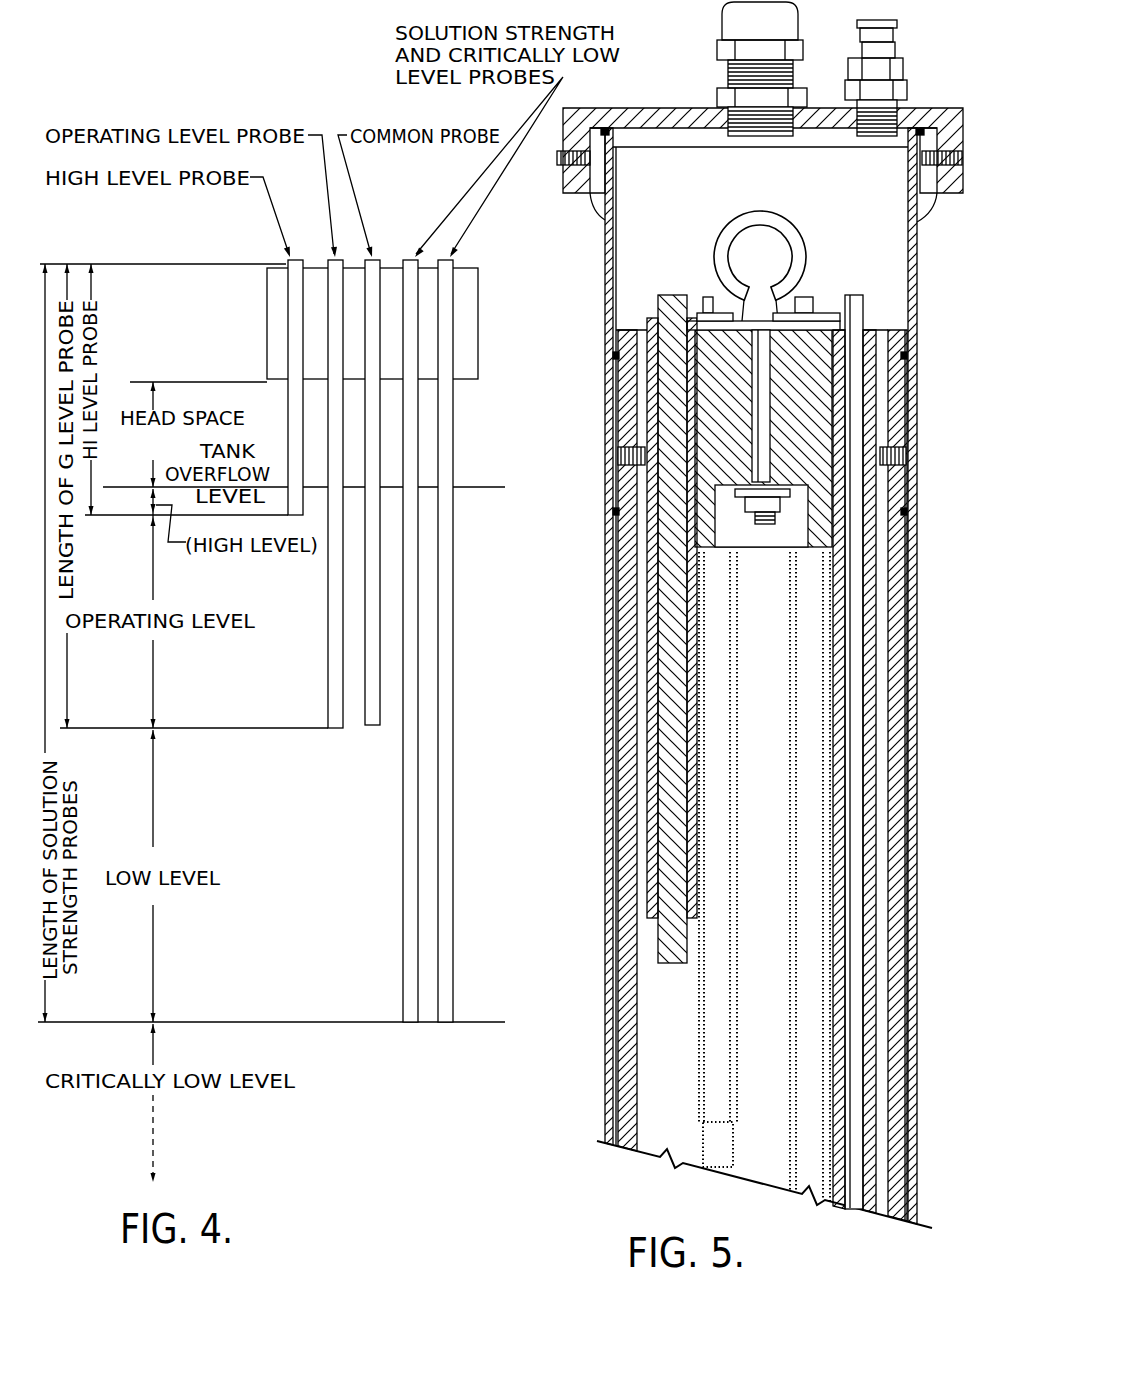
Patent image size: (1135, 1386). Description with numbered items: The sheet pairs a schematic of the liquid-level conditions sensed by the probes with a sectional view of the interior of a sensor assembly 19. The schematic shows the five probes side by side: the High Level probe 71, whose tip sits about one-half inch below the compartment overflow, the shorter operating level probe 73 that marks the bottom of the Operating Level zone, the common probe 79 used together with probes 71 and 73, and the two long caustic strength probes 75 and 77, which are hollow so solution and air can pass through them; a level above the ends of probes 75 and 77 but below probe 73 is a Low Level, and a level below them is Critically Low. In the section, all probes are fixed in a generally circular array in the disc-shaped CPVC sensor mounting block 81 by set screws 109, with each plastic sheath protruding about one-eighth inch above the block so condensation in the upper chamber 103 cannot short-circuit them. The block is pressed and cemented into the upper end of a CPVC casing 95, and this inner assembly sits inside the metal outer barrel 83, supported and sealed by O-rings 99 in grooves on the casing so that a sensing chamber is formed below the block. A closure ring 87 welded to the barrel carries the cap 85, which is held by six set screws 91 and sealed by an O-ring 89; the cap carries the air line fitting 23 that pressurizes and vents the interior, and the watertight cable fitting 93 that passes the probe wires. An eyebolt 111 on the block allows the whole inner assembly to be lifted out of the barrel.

In FIG. 4, the sensor assembly 19 is at (532, 220).
In FIG. 5, the air line fitting 23 is at (897, 28).
In FIG. 4, the High Level probe 71 is at (288, 430).
In FIG. 5, the High Level probe 71 is at (650, 298).
In FIG. 4, the operating level probe 73 is at (328, 627).
In FIG. 5, the operating level probe 73 is at (705, 297).
In FIG. 4, the caustic strength probe 75 is at (403, 803).
In FIG. 5, the caustic strength probe 75 is at (810, 295).
In FIG. 4, the caustic strength probe 77 is at (455, 835).
In FIG. 5, the caustic strength probe 77 is at (857, 295).
In FIG. 4, the common probe 79 is at (368, 732).
In FIG. 4, the sensor mounting block 81 is at (478, 302).
In FIG. 5, the sensor mounting block 81 is at (735, 405).
In FIG. 5, the outer barrel 83 is at (918, 282).
In FIG. 5, the cap 85 is at (962, 122).
In FIG. 5, the closure ring 87 is at (925, 200).
In FIG. 5, the O-ring 89 is at (920, 125).
In FIG. 5, the set screws 91 is at (558, 158).
In FIG. 5, the cable fitting 93 is at (722, 22).
In FIG. 5, the casing 95 is at (622, 558).
In FIG. 5, the O-rings 99 is at (906, 354).
In FIG. 5, the upper chamber 103 is at (866, 226).
In FIG. 5, the set screws 109 is at (906, 455).
In FIG. 5, the eyebolt 111 is at (745, 232).